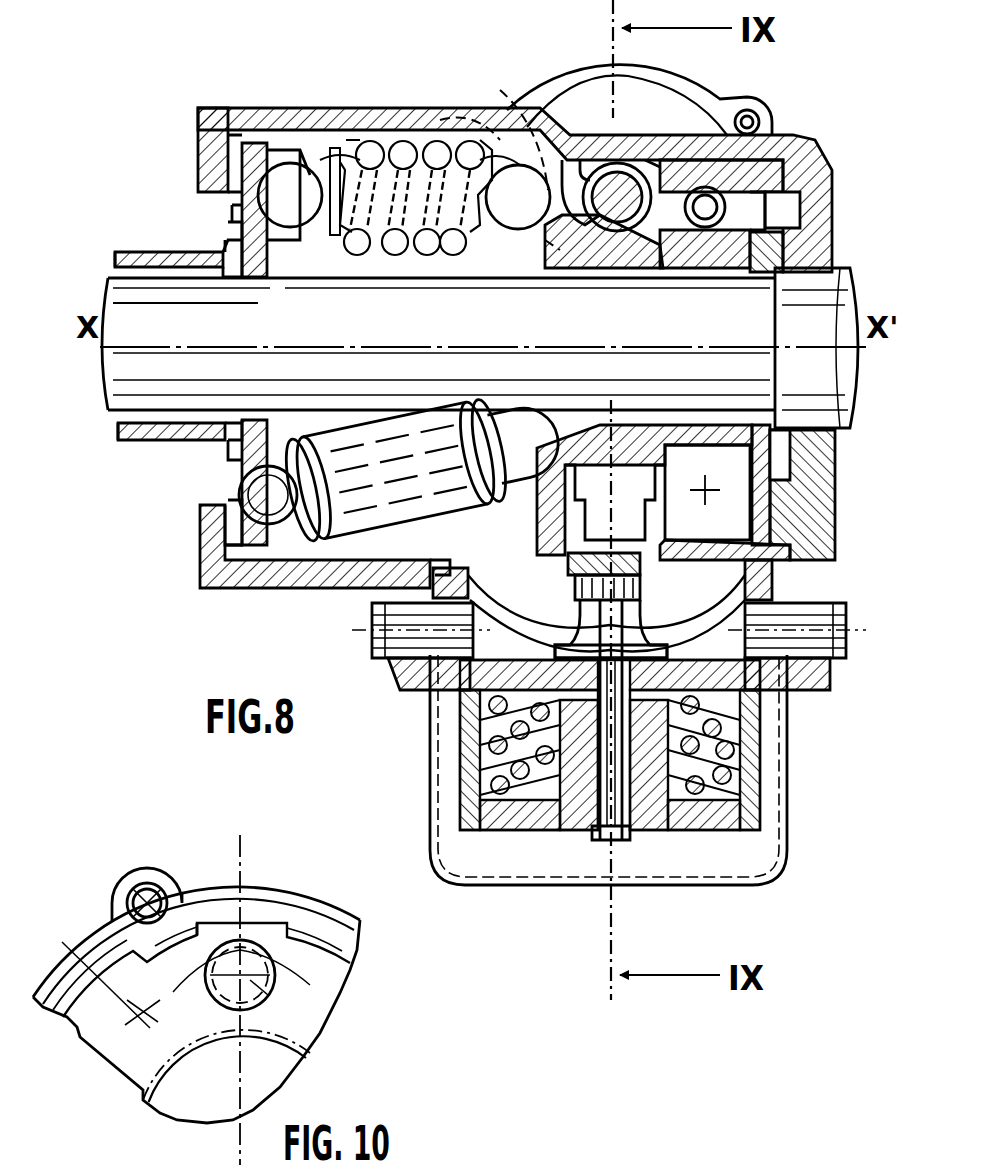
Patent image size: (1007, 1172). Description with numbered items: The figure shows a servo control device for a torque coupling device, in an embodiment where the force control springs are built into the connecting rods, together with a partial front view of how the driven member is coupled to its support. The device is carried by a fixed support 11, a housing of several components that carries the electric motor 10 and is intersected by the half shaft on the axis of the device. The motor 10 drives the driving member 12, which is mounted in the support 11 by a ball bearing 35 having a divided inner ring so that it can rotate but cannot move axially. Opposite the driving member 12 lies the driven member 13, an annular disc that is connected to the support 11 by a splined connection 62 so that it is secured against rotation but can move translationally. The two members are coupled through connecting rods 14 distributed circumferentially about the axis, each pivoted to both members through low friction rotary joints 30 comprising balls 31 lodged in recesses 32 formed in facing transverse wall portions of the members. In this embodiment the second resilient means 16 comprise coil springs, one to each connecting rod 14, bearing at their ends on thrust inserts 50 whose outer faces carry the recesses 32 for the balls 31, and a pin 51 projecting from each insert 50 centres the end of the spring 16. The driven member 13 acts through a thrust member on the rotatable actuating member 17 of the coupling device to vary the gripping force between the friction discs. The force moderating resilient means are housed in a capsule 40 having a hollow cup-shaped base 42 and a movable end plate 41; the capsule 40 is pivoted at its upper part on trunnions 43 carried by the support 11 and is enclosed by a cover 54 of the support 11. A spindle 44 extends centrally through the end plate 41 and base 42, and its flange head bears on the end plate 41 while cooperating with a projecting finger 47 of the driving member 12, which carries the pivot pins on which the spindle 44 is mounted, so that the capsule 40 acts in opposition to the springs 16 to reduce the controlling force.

In FIG. 8, the electric motor 10 is at (585, 68).
In FIG. 8, the fixed support 11 is at (272, 594).
In FIG. 10, the fixed support 11 is at (300, 884).
In FIG. 8, the driving member 12 is at (565, 258).
In FIG. 8, the driven member 13 is at (232, 203).
In FIG. 10, the driven member 13 is at (307, 1023).
In FIG. 8, the connecting rods 14 is at (388, 128).
In FIG. 8, the second resilient means 16 is at (420, 252).
In FIG. 8, the rotatable actuating member 17 is at (150, 442).
In FIG. 8, the low friction rotary joints 30 is at (226, 442).
In FIG. 8, the balls 31 is at (292, 230).
In FIG. 8, the recesses 32 is at (520, 172).
In FIG. 10, the recesses 32 is at (267, 985).
In FIG. 8, the ball bearing 35 is at (715, 465).
In FIG. 8, the capsule 40 is at (550, 832).
In FIG. 8, the end plate 41 is at (655, 655).
In FIG. 8, the base 42 is at (470, 800).
In FIG. 8, the trunnions 43 is at (412, 688).
In FIG. 8, the spindle 44 is at (632, 835).
In FIG. 8, the projecting finger 47 is at (566, 558).
In FIG. 8, the thrust inserts 50 is at (318, 235).
In FIG. 8, the pin 51 is at (332, 180).
In FIG. 8, the cover 54 is at (782, 855).
In FIG. 10, the splined connection 62 is at (218, 935).